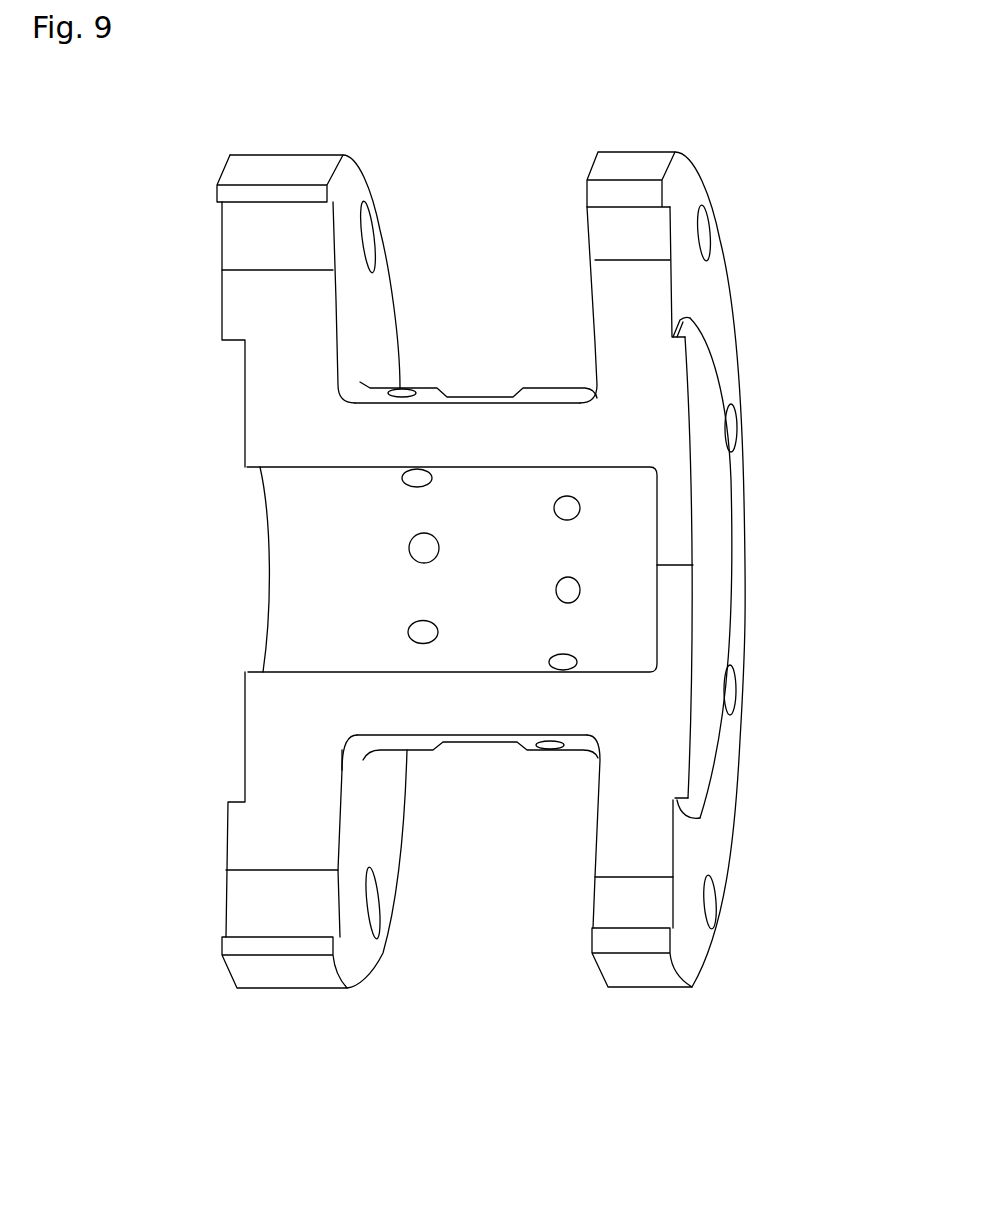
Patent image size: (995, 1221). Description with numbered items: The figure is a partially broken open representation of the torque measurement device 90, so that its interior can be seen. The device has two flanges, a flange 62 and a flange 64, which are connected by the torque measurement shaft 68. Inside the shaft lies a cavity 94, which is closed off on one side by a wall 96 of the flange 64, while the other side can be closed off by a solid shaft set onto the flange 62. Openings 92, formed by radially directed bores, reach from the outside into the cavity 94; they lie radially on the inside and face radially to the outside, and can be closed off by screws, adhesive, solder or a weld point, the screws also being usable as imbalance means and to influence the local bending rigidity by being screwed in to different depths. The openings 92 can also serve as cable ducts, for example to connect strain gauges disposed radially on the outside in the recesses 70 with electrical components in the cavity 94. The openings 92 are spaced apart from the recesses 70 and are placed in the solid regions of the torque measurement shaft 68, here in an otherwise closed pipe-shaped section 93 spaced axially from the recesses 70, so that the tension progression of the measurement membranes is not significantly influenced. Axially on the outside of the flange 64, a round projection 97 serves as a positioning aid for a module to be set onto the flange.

The torque measurement device 90 is at (243, 132).
The flange 62 is at (263, 193).
The flange 64 is at (628, 293).
The torque measurement shaft 68 is at (528, 700).
The recesses 70 is at (485, 762).
The openings 92 is at (424, 548).
The pipe-shaped section 93 is at (567, 374).
The cavity 94 is at (246, 595).
The wall 96 is at (675, 602).
The round projection 97 is at (682, 320).